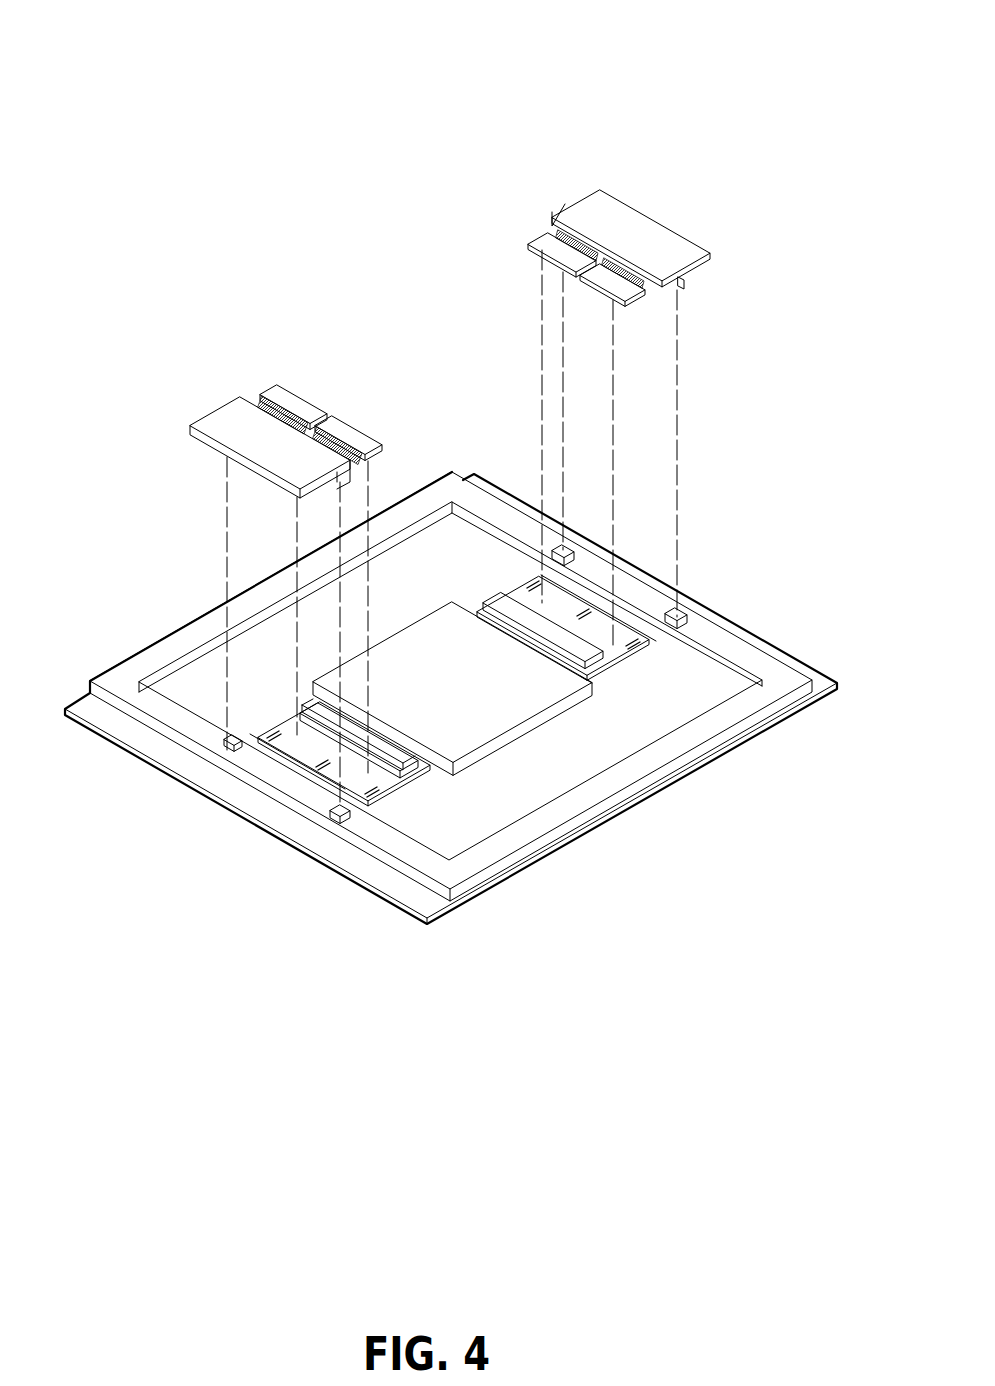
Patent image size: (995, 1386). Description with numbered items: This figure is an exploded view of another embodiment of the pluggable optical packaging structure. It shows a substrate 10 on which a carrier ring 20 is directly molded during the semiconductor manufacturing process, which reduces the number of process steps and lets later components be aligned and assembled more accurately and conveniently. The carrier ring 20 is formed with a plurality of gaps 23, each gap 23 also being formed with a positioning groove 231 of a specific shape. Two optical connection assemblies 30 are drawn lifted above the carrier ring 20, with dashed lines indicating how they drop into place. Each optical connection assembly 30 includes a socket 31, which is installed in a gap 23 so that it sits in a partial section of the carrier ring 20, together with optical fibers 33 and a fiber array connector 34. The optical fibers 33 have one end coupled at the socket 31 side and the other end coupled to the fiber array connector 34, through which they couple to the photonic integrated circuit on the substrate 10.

The substrate 10 is at (413, 890).
The carrier ring 20 is at (480, 855).
The gap 23 is at (628, 595).
The positioning groove 231 is at (682, 625).
The optical connection assembly 30 is at (532, 45).
The socket 31 is at (642, 238).
The optical fibers 33 is at (573, 245).
The fiber array connector 34 is at (535, 240).